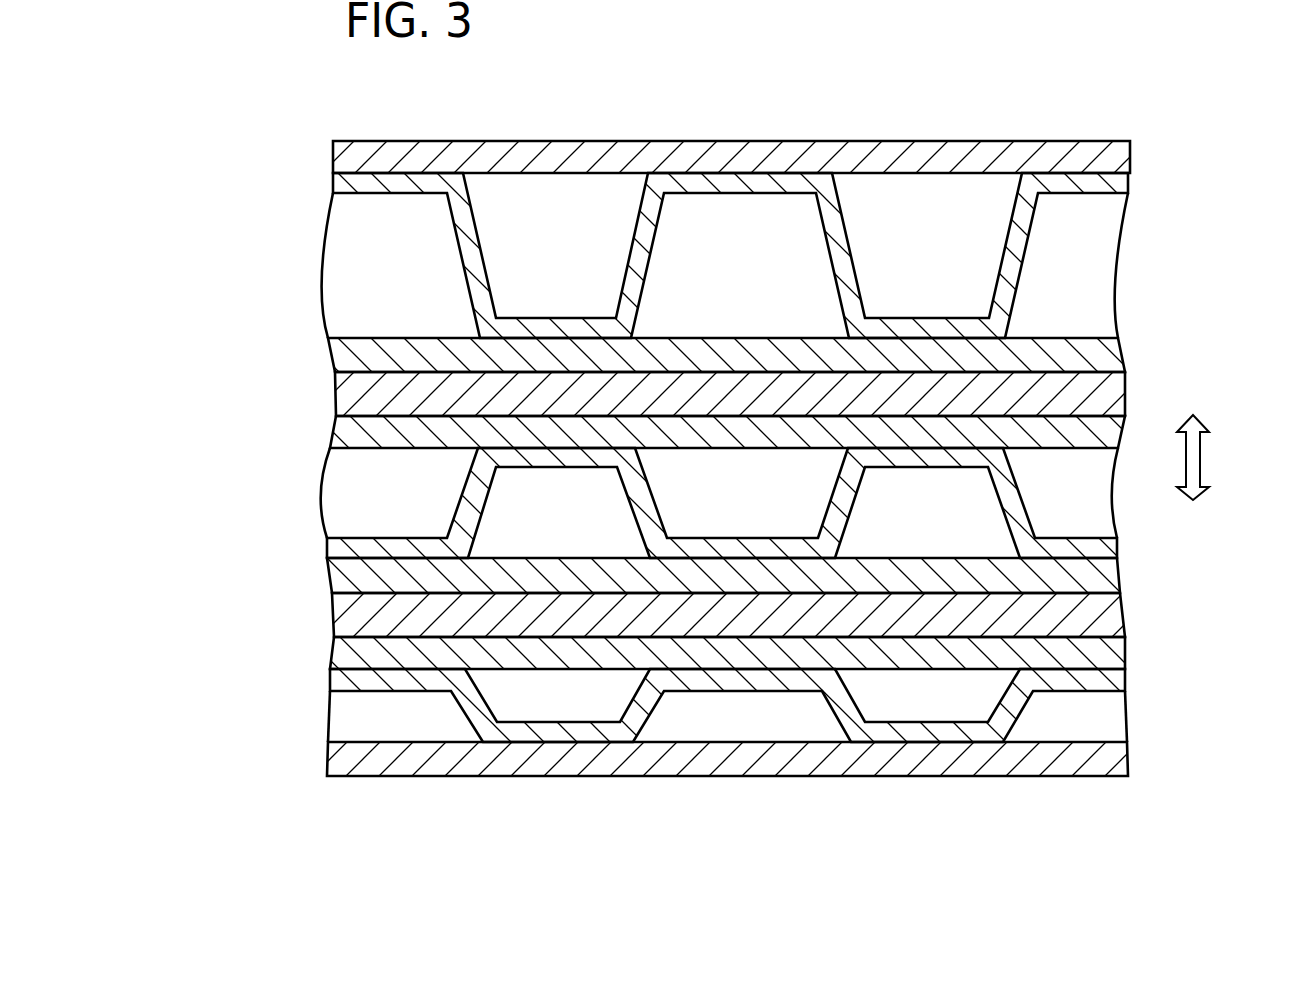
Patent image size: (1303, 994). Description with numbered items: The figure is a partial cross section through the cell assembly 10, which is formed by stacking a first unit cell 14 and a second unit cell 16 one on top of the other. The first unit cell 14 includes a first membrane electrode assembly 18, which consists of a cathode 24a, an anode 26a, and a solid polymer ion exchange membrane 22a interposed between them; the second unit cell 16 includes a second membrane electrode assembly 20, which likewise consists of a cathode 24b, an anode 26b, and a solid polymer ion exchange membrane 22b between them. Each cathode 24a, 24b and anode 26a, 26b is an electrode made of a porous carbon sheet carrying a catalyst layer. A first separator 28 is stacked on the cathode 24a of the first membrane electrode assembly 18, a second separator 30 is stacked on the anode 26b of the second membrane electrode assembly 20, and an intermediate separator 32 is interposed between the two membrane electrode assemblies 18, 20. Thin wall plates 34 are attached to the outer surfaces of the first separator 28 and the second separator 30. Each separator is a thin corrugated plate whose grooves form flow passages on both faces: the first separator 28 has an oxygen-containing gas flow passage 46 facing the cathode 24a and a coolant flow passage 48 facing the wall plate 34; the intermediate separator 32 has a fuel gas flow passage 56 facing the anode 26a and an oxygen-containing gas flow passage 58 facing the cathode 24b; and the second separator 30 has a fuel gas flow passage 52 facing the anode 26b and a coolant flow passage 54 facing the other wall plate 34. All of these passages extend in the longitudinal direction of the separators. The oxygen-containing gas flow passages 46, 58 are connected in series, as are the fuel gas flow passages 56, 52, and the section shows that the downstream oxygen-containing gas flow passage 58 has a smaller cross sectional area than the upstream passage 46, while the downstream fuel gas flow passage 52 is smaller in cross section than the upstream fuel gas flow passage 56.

The cell assembly 10 is at (769, 42).
The first unit cell 14 is at (209, 114).
The second unit cell 16 is at (210, 552).
The first membrane electrode assembly 18 is at (729, 398).
The second membrane electrode assembly 20 is at (735, 618).
The solid polymer ion exchange membrane 22a is at (347, 407).
The solid polymer ion exchange membrane 22b is at (347, 622).
The cathode 24a is at (347, 365).
The cathode 24b is at (347, 581).
The anode 26a is at (347, 446).
The anode 26b is at (348, 660).
The first separator 28 is at (1133, 181).
The second separator 30 is at (1130, 680).
The intermediate separator 32 is at (1119, 546).
The wall plate 34 is at (868, 140).
The oxygen-containing gas flow passage 46 is at (725, 265).
The coolant flow passage 48 is at (742, 245).
The fuel gas flow passage 52 is at (742, 695).
The coolant flow passage 54 is at (434, 790).
The fuel gas flow passage 56 is at (719, 493).
The oxygen-containing gas flow passage 58 is at (744, 512).